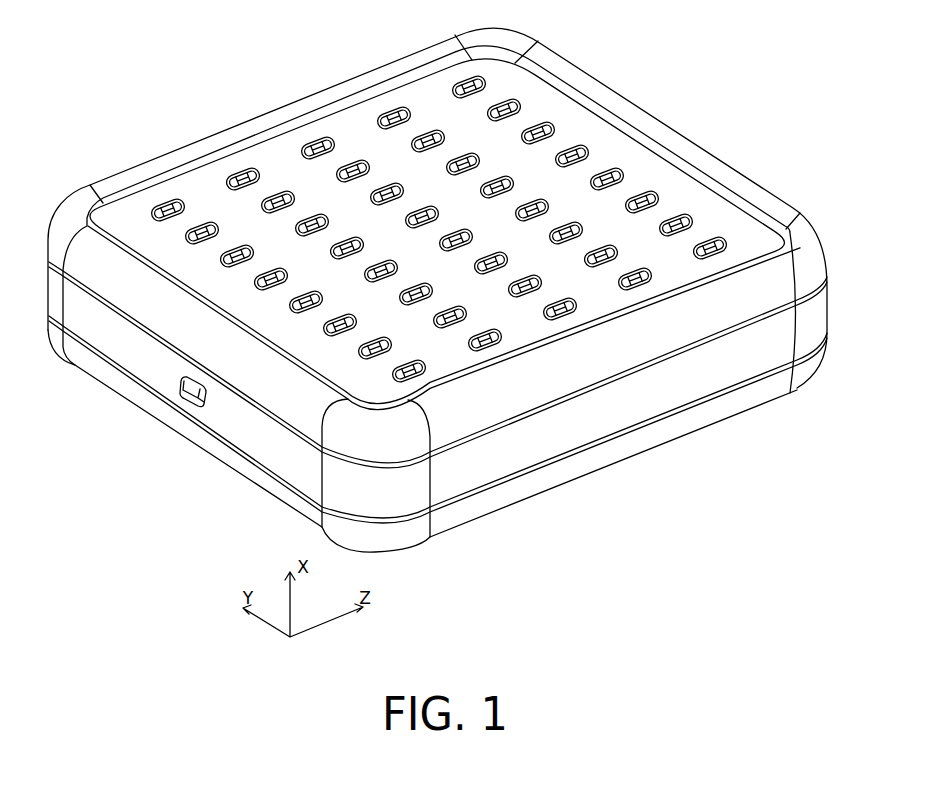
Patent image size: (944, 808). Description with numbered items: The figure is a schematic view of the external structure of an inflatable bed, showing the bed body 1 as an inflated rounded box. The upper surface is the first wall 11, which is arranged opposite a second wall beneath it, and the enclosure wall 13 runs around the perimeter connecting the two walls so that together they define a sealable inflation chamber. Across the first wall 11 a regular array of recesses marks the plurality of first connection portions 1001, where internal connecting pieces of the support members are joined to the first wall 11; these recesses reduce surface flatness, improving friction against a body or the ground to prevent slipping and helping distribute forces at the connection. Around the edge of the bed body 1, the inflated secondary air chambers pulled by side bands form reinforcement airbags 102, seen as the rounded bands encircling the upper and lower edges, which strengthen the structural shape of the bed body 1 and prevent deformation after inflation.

The bed body 1 is at (313, 47).
The first wall 11 is at (375, 150).
The first connection portions 1001 is at (203, 223).
The reinforcement airbag 102 is at (720, 312).
The enclosure wall 13 is at (740, 398).